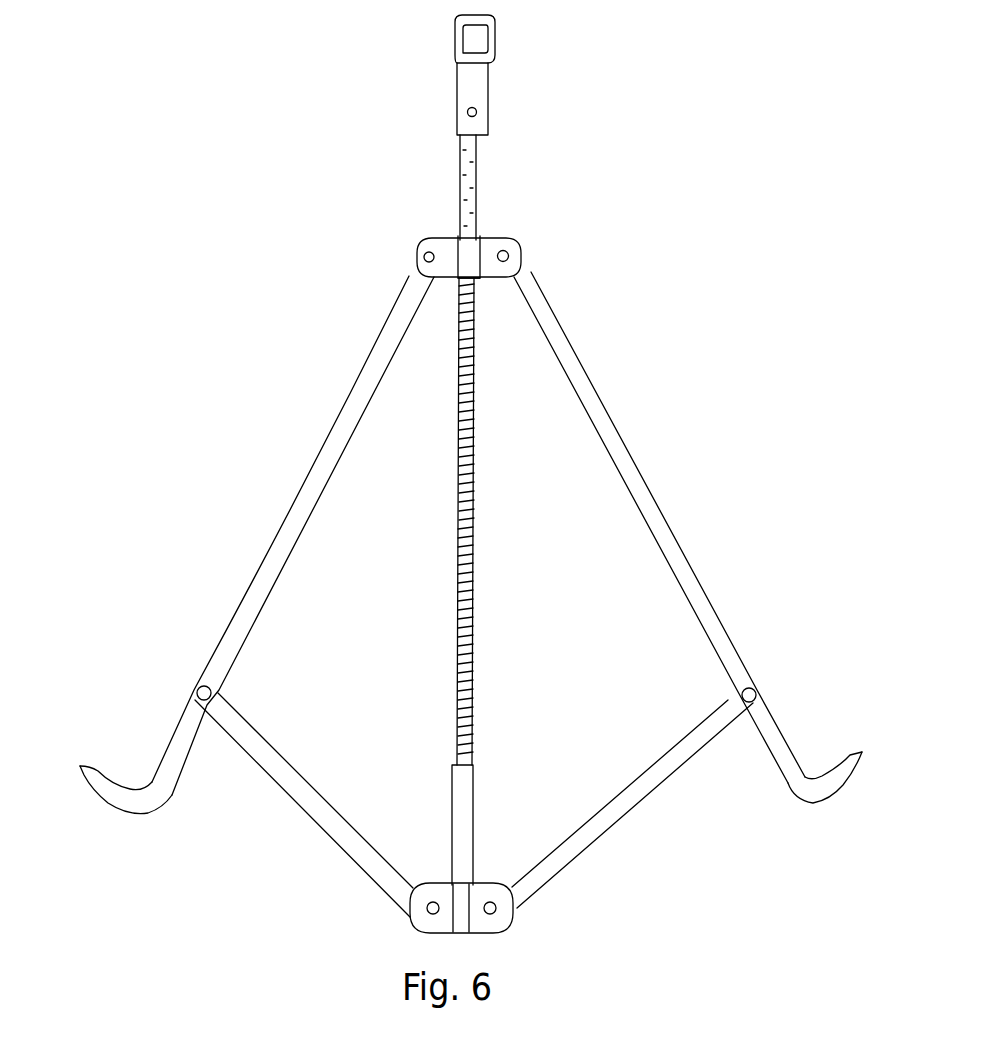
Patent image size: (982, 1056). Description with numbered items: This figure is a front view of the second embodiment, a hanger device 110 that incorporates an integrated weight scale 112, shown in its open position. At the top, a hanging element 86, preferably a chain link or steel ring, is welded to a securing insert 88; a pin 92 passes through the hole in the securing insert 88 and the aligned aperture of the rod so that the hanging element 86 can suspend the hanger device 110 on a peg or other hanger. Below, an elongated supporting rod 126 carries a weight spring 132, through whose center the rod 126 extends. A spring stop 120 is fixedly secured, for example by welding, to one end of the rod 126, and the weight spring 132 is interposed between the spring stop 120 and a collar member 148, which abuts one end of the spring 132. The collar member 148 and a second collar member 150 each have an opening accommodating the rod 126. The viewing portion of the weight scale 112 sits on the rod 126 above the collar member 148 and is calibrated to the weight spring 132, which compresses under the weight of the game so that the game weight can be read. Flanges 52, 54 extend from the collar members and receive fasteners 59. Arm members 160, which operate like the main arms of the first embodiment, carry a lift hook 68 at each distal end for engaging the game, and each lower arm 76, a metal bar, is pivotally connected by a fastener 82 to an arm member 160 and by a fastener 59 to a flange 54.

The hanger device 110 is at (752, 254).
The weight scale 112 is at (523, 198).
The hanging element 86 is at (495, 22).
The securing insert 88 is at (485, 95).
The pin 92 is at (467, 114).
The flange 52 is at (510, 246).
The fastener 59 is at (426, 255).
The collar member 148 is at (458, 283).
The weight spring 132 is at (470, 474).
The elongated supporting rod 126 is at (471, 642).
The spring stop 120 is at (465, 803).
The collar member 150 is at (470, 887).
The flange 54 is at (410, 925).
The arm member 160 is at (310, 488).
The fastener 82 is at (199, 688).
The lift hook 68 is at (97, 763).
The lower arm 76 is at (310, 812).